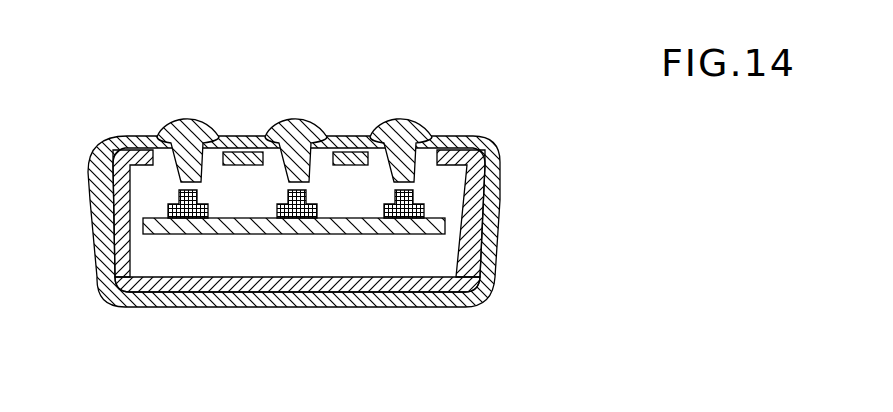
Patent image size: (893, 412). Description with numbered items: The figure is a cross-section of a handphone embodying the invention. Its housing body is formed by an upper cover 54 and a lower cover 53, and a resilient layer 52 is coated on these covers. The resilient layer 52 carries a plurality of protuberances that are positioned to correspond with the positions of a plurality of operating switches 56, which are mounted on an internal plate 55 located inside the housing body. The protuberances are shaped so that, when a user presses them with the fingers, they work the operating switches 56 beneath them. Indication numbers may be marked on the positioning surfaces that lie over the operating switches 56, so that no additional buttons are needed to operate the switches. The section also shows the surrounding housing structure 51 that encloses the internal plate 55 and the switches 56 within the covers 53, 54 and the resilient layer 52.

The outer casing layer 51 is at (395, 298).
The resilient layer 52 is at (415, 128).
The lower cover 53 is at (301, 287).
The upper cover 54 is at (110, 139).
The internal plate 55 is at (229, 227).
The operating switches 56 is at (316, 204).